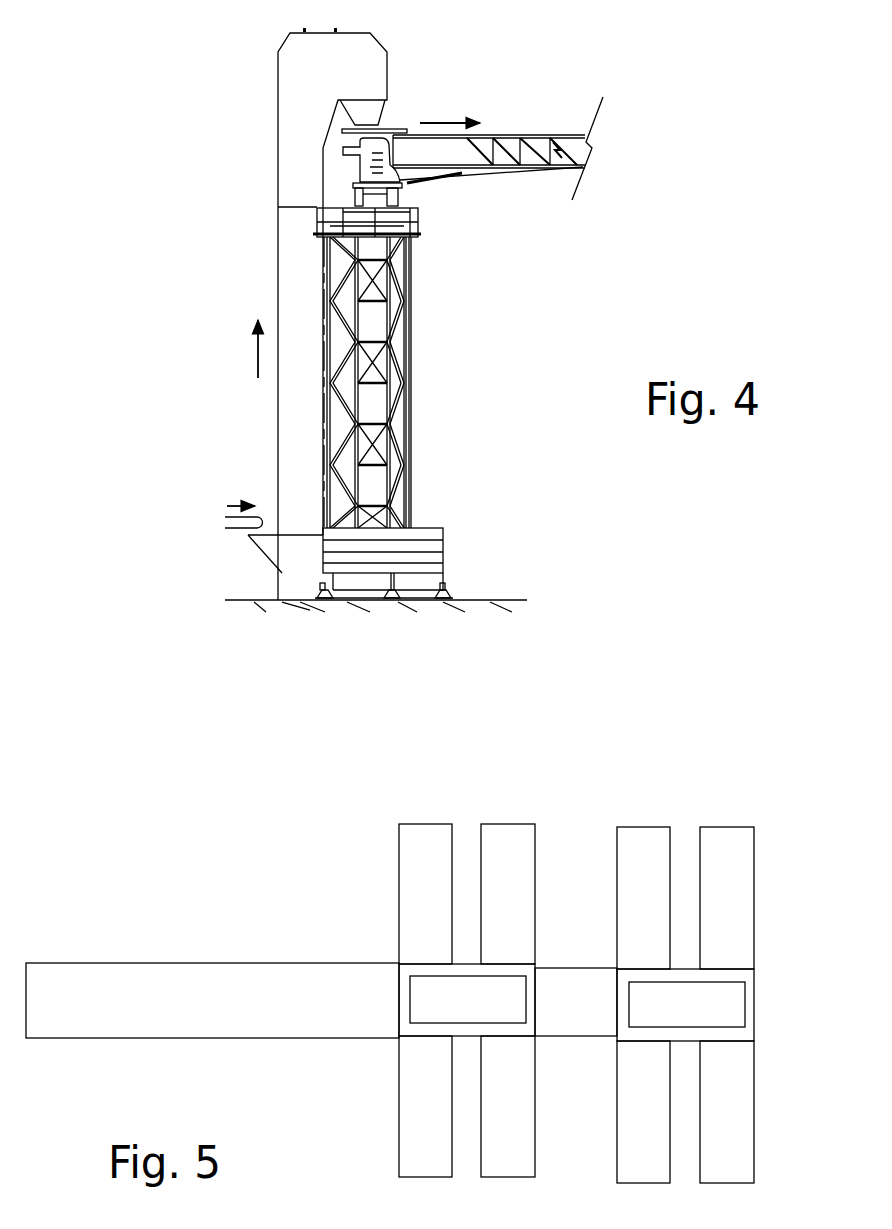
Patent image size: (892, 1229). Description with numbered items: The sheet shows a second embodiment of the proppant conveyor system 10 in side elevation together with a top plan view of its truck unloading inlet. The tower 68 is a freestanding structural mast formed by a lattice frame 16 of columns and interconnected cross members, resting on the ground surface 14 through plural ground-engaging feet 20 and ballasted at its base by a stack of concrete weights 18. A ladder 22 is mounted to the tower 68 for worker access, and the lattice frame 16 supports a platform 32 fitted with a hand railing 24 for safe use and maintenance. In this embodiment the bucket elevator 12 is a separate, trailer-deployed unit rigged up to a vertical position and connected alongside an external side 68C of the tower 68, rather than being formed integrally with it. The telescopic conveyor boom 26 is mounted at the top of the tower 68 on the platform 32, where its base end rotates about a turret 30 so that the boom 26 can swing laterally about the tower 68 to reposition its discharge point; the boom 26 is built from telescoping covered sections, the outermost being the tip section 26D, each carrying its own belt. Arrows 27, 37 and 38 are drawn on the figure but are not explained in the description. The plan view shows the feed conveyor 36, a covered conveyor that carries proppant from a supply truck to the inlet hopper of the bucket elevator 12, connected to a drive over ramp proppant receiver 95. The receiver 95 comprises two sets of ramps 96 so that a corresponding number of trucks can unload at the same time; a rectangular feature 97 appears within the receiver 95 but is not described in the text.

In FIG. 4, the proppant conveyor system 10 is at (189, 31).
In FIG. 4, the bucket elevator 12 is at (278, 60).
In FIG. 4, the ground surface 14 is at (513, 600).
In FIG. 4, the lattice frame 16 is at (410, 283).
In FIG. 4, the weights 18 is at (443, 528).
In FIG. 4, the ground-engaging feet 20 is at (453, 595).
In FIG. 4, the ladder 22 is at (390, 360).
In FIG. 4, the hand railing 24 is at (418, 210).
In FIG. 4, the telescopic conveyor boom 26 is at (537, 103).
In FIG. 4, the tip section 26D is at (533, 168).
In FIG. 4, the boom extension direction 27 is at (452, 122).
In FIG. 4, the turret 30 is at (345, 170).
In FIG. 4, the platform 32 is at (337, 230).
In FIG. 4, the feed conveyor 36 is at (250, 537).
In FIG. 5, the feed conveyor 36 is at (137, 963).
In FIG. 4, the insertion direction 37 is at (238, 500).
In FIG. 4, the climbing direction 38 is at (258, 345).
In FIG. 4, the tower 68 is at (409, 265).
In FIG. 4, the external side of the tower 68C is at (323, 300).
In FIG. 5, the drive over ramp proppant receiver 95 is at (566, 964).
In FIG. 5, the sets of ramps 96 is at (435, 805).
In FIG. 5, the beam receiving opening 97 is at (445, 1005).